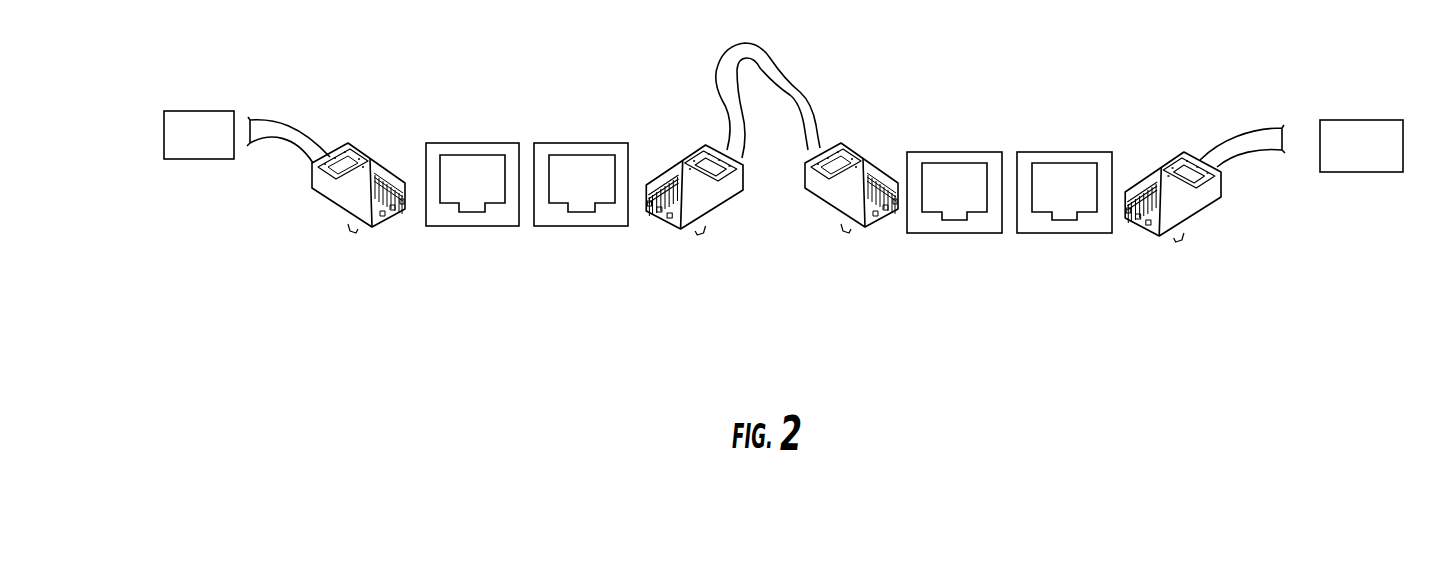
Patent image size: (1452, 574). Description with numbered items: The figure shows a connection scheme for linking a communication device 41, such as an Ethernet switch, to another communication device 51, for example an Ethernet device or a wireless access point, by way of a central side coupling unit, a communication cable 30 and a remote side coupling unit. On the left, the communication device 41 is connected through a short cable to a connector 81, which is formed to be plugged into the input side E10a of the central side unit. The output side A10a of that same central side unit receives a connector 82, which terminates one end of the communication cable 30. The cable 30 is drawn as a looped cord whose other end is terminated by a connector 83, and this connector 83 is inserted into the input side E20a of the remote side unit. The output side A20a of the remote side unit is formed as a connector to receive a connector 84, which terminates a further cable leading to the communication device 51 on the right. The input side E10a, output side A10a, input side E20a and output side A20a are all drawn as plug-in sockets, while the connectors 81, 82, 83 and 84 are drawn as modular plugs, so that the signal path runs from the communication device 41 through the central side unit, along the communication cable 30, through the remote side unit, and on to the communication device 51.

The communication cable 30 is at (777, 65).
The communication device 41 is at (200, 159).
The communication device 51 is at (1383, 120).
The connector 81 is at (350, 210).
The connector 82 is at (687, 227).
The connector 83 is at (858, 227).
The connector 84 is at (1185, 222).
The input side E10a is at (495, 267).
The output side A10a is at (600, 267).
The input side E20a is at (969, 267).
The output side A20a is at (1079, 267).